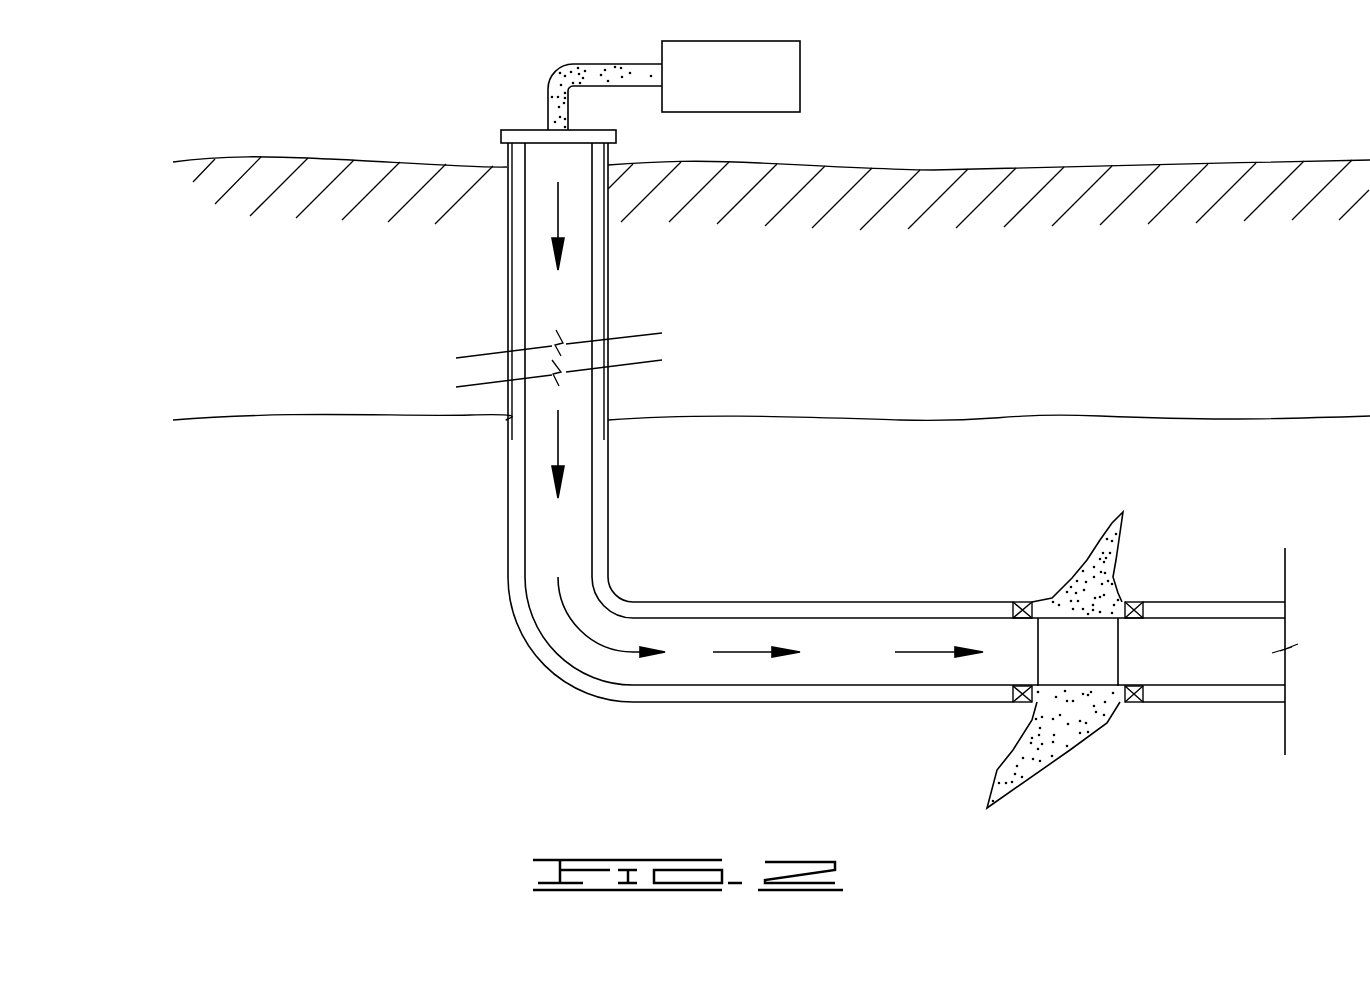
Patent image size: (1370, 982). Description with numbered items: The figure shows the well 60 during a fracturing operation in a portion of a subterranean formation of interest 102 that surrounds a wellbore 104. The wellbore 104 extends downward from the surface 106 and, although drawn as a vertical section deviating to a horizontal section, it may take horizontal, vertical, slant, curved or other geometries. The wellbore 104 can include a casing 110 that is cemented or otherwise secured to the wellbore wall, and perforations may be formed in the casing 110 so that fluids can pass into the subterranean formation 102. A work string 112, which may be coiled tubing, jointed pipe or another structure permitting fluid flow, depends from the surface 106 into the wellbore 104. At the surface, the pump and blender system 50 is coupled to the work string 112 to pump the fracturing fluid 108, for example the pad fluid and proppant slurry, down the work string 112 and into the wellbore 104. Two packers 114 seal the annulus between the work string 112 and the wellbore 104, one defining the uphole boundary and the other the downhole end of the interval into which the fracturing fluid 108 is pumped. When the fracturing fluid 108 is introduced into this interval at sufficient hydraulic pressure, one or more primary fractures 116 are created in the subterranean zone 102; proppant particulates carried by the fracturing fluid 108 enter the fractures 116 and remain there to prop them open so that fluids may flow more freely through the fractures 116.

The pump and blender system 50 is at (743, 85).
The well 60 is at (508, 705).
The subterranean formation of interest 102 is at (831, 470).
The wellbore 104 is at (517, 287).
The surface 106 is at (1210, 163).
The fracturing fluid 108 is at (558, 68).
The casing 110 is at (510, 332).
The work string 112 is at (523, 520).
The packers 114 is at (1020, 598).
The primary fractures 116 is at (1055, 532).